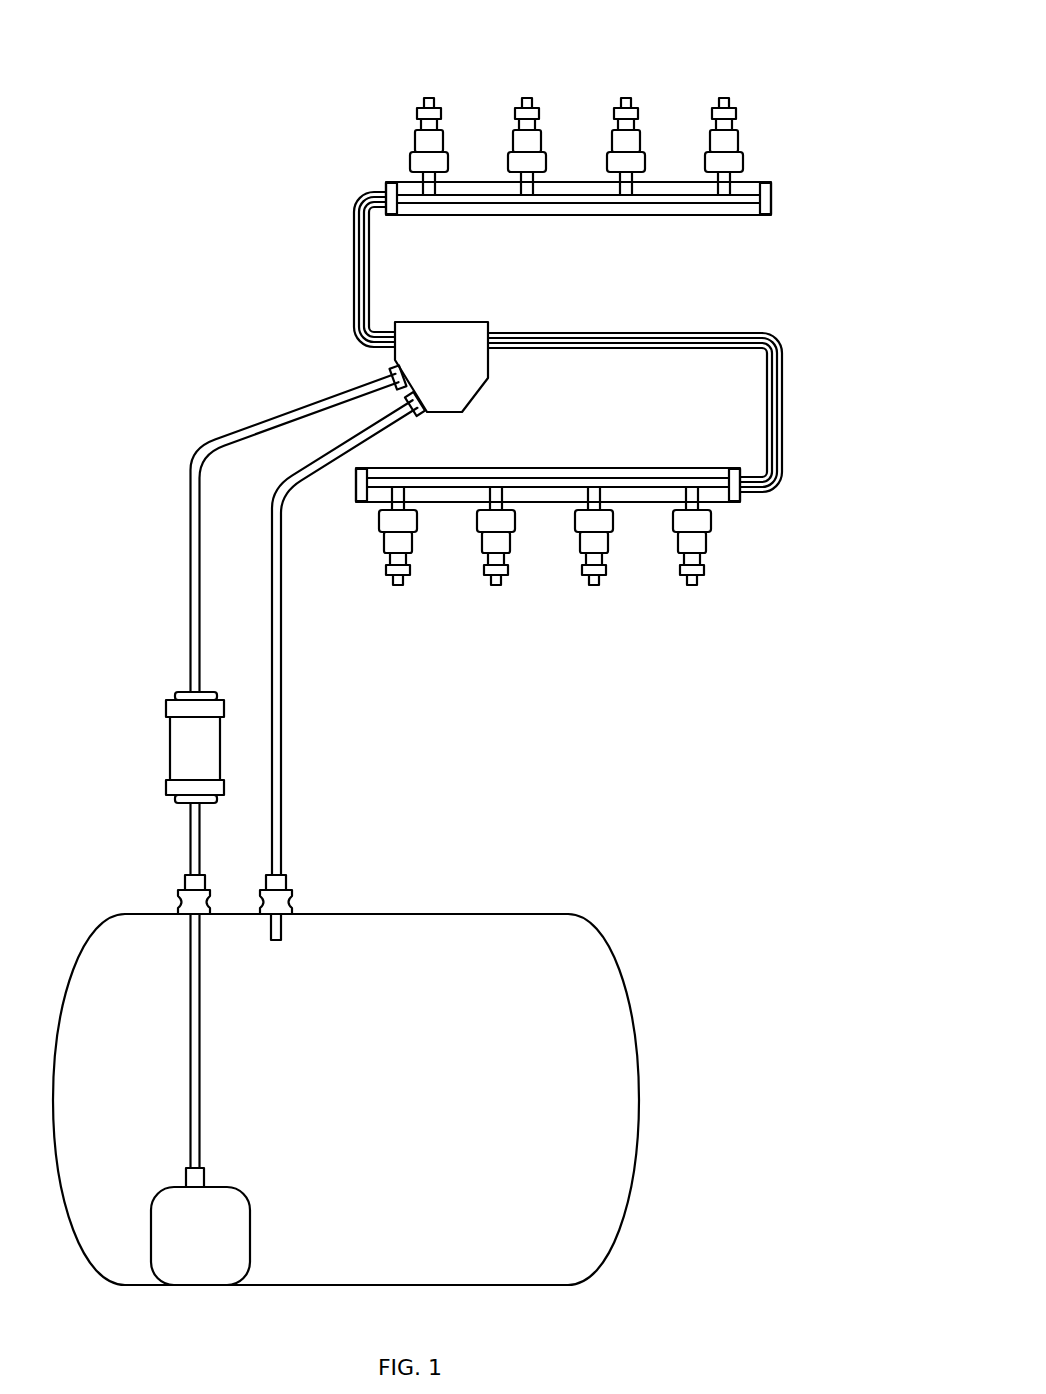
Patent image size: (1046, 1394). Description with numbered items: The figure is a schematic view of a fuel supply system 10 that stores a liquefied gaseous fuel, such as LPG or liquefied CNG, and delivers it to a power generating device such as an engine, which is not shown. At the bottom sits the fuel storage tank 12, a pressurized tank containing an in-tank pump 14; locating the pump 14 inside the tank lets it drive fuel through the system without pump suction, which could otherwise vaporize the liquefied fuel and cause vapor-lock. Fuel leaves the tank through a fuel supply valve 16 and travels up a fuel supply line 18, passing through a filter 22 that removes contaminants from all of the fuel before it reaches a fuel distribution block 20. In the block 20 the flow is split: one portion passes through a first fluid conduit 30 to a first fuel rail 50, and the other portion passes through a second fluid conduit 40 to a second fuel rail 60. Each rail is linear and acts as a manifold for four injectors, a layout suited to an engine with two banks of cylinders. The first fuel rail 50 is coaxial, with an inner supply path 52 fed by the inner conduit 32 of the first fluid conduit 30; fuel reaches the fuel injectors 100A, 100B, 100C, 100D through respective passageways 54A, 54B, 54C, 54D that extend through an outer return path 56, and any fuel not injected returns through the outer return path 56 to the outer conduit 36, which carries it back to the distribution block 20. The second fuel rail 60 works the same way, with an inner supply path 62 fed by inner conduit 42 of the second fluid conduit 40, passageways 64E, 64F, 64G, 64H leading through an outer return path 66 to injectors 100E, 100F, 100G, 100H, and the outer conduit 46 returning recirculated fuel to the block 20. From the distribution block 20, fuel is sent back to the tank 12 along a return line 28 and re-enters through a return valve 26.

The fuel supply system 10 is at (148, 83).
The fuel storage tank 12 is at (430, 1112).
The pump 14 is at (187, 1251).
The fuel supply valve 16 is at (180, 897).
The fuel supply line 18 is at (170, 614).
The fuel distribution block 20 is at (428, 371).
The filter 22 is at (182, 769).
The return valve 26 is at (290, 897).
The return line 28 is at (295, 745).
The first fluid conduit 30 is at (682, 405).
The inner conduit 32 is at (778, 443).
The outer conduit 36 is at (783, 398).
The second fluid conduit 40 is at (327, 262).
The inner conduit 42 is at (357, 252).
The outer conduit 46 is at (358, 207).
The first fuel rail 50 is at (557, 490).
The inner supply path 52 is at (590, 468).
The passageway 54A is at (422, 546).
The passageway 54B is at (520, 546).
The passageway 54C is at (618, 546).
The passageway 54D is at (716, 546).
The outer return path 56 is at (550, 467).
The second fuel rail 60 is at (606, 191).
The inner supply path 62 is at (573, 197).
The passageway 64E is at (404, 137).
The passageway 64F is at (503, 137).
The passageway 64G is at (600, 137).
The passageway 64H is at (699, 137).
The outer return path 66 is at (650, 208).
The fuel injector 100A is at (403, 636).
The fuel injector 100B is at (501, 636).
The fuel injector 100C is at (599, 636).
The fuel injector 100D is at (698, 636).
The fuel injector 100E is at (422, 47).
The fuel injector 100F is at (520, 47).
The fuel injector 100G is at (618, 47).
The fuel injector 100H is at (717, 47).